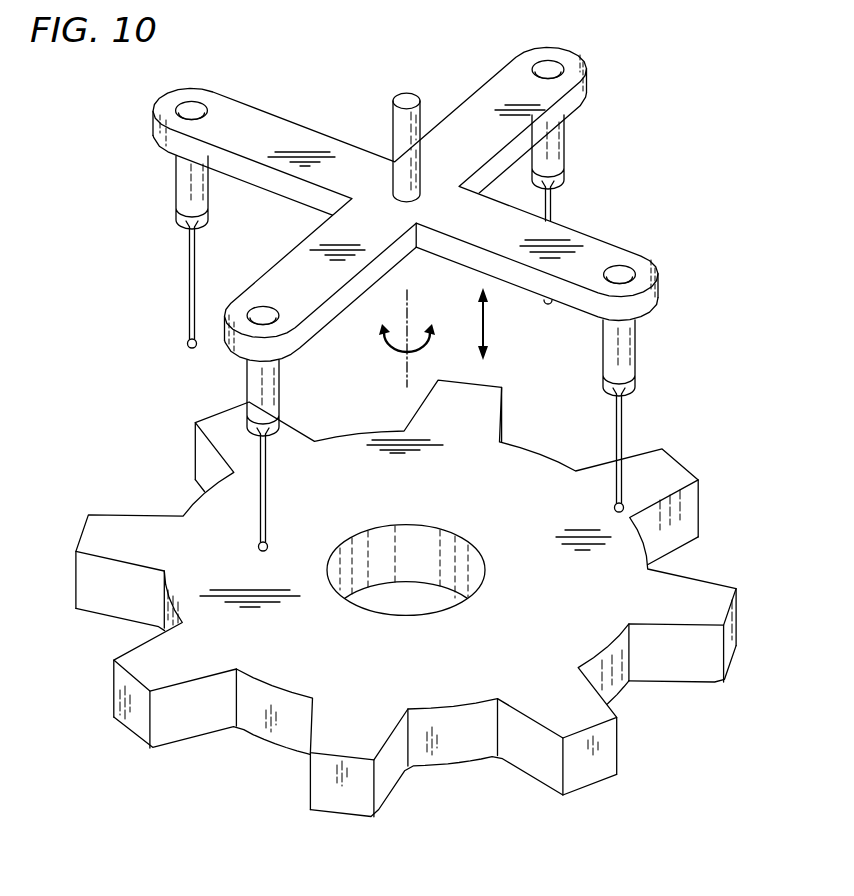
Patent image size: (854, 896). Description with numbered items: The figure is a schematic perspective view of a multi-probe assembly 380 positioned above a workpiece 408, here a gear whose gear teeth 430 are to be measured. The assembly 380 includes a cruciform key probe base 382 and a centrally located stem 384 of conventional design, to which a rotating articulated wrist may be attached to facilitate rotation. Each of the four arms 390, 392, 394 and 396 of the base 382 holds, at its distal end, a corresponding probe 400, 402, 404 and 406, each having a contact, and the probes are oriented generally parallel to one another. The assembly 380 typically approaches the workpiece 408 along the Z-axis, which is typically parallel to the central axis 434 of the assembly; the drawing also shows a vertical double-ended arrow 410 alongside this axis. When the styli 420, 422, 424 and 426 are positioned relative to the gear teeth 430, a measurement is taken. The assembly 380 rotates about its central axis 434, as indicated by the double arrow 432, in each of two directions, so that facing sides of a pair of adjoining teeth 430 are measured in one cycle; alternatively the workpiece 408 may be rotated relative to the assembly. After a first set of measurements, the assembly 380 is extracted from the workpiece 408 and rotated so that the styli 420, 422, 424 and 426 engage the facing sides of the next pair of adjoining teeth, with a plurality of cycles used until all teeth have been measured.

The multi-probe assembly 380 is at (585, 203).
The cruciform key probe base 382 is at (498, 242).
The stem 384 is at (393, 125).
The arm 390 is at (645, 268).
The arm 392 is at (245, 300).
The arm 394 is at (222, 100).
The arm 396 is at (570, 62).
The probe 400 is at (661, 409).
The probe 402 is at (281, 455).
The probe 404 is at (156, 247).
The probe 406 is at (598, 200).
The workpiece 408 is at (407, 610).
The vertical movement arrow 410 is at (486, 323).
The stylus 420 is at (626, 413).
The stylus 422 is at (258, 540).
The stylus 424 is at (188, 282).
The stylus 426 is at (555, 205).
The gear teeth 430 is at (232, 416).
The double arrow 432 is at (384, 347).
The central axis 434 is at (410, 302).